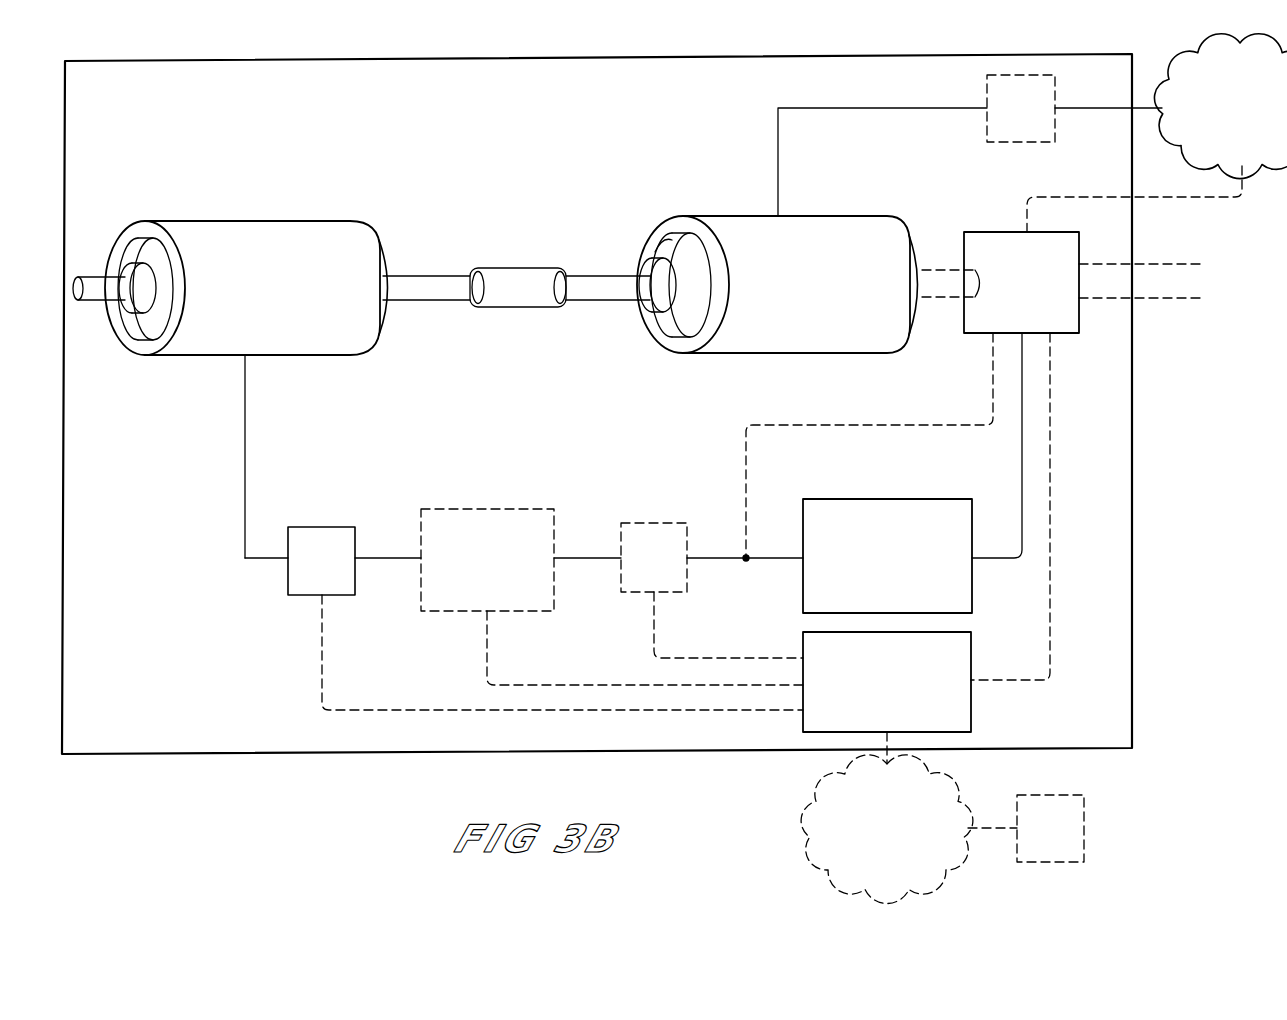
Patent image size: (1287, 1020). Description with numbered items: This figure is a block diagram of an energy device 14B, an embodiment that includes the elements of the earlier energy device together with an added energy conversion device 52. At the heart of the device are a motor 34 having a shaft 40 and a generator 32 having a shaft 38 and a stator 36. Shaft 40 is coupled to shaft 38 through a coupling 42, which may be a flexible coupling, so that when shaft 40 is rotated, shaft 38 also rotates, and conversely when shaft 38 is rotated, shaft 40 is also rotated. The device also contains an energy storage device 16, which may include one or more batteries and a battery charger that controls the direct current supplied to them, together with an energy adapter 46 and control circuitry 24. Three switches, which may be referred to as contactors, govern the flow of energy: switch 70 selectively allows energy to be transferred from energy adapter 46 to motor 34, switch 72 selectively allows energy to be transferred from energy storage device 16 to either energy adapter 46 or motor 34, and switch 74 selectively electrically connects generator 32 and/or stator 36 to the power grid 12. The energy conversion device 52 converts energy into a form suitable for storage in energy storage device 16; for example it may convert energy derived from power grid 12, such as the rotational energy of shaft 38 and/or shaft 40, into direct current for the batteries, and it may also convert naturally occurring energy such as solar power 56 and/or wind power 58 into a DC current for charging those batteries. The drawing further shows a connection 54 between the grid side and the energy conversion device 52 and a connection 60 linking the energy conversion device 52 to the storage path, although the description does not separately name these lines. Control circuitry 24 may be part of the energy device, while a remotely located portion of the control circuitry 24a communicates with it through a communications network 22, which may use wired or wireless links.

The power grid 12 is at (1228, 117).
The energy device 14B is at (1132, 563).
The energy storage device 16 is at (876, 603).
The communications network 22 is at (875, 840).
The control circuitry 24 is at (878, 719).
The control circuitry 24a is at (1035, 840).
The generator 32 is at (791, 296).
The motor 34 is at (257, 301).
The stator 36 is at (665, 250).
The shaft 38 is at (605, 288).
The shaft 40 is at (430, 285).
The coupling 42 is at (515, 268).
The energy adapter 46 is at (475, 570).
The energy conversion device 52 is at (1010, 295).
The grid connection line 54 is at (1060, 195).
The solar power 56 is at (1177, 262).
The wind power 58 is at (1177, 300).
The connection line 60 is at (880, 420).
The switch 70 is at (309, 570).
The switch 72 is at (642, 570).
The switch 74 is at (1009, 120).